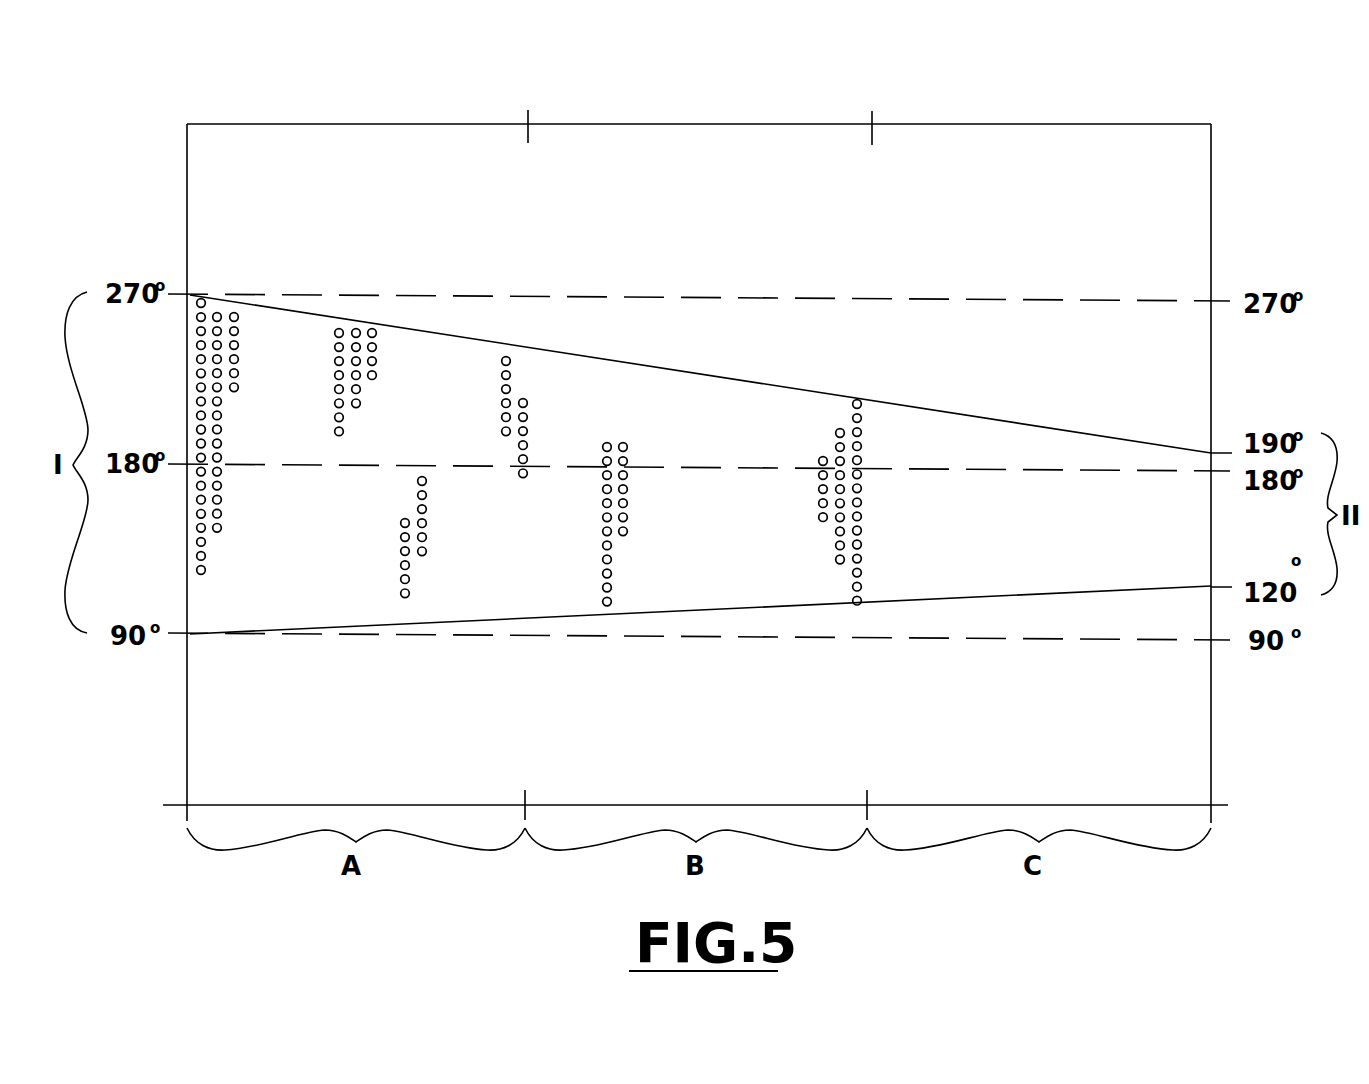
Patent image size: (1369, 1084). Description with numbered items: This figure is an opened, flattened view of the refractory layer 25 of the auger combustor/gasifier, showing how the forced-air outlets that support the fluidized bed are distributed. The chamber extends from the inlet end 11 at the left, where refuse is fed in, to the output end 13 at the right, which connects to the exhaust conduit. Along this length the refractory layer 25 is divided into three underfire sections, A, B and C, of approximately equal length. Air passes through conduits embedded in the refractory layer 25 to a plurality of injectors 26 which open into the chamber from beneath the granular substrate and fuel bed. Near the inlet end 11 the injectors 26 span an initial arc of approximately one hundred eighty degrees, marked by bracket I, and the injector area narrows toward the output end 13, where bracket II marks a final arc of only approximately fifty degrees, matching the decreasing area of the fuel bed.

The refractory layer 25 is at (697, 165).
The injectors 26 is at (249, 355).
The inlet end 11 is at (187, 723).
The output end 13 is at (1176, 718).